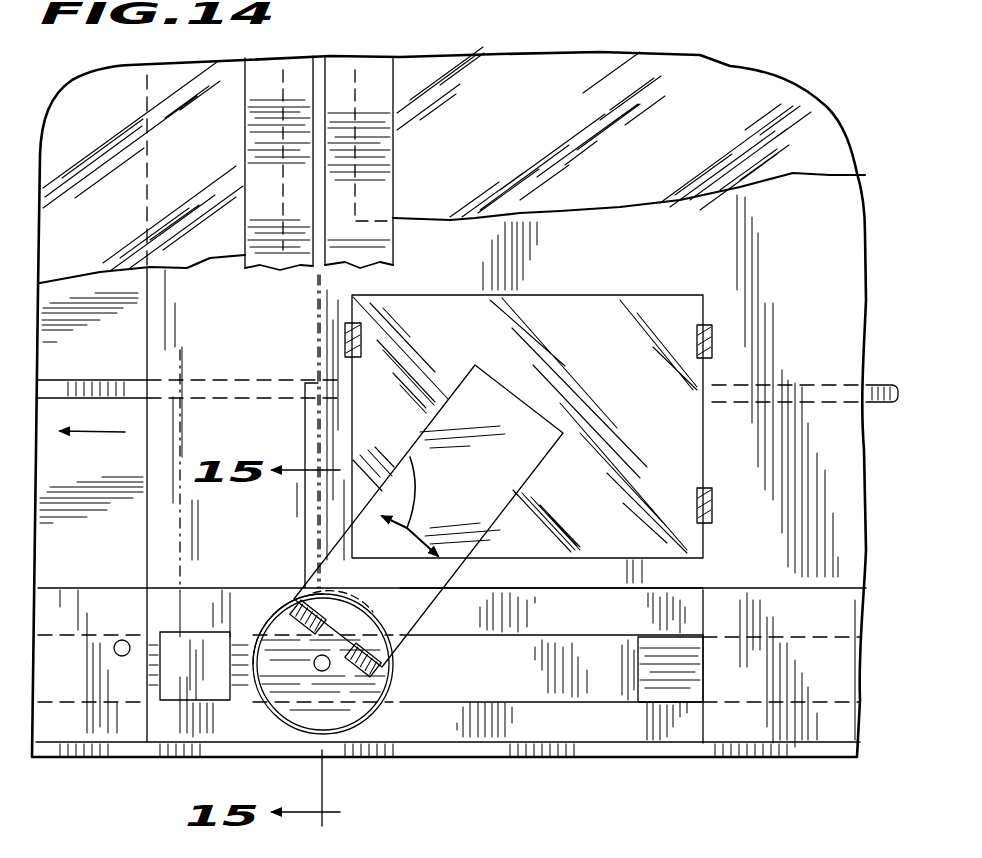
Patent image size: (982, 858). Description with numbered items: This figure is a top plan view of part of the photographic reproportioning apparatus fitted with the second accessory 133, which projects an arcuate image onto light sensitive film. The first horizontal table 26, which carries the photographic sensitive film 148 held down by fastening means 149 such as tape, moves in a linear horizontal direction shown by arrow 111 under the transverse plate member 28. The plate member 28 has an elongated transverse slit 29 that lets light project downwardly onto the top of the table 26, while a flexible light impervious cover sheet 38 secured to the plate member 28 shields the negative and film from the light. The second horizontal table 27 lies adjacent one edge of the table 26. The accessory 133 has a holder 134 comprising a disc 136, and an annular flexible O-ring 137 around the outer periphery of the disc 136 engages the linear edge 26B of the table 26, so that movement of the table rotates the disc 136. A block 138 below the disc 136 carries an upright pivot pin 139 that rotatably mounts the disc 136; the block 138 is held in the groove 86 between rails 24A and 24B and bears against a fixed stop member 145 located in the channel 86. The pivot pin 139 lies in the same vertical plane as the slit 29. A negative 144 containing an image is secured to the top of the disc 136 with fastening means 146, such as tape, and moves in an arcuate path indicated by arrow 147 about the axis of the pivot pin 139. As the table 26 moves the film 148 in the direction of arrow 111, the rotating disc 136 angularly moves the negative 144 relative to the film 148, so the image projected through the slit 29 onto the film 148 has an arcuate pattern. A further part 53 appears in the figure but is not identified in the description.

The first horizontal table 26 is at (833, 197).
The second horizontal table 27 is at (837, 670).
The transverse plate member 28 is at (380, 192).
The elongated transverse slit 29 is at (320, 62).
The flexible light impervious cover sheet 38 is at (596, 72).
The shelf 53 is at (117, 380).
The groove 86 is at (607, 678).
The arrow 111 is at (108, 436).
The second accessory 133 is at (422, 770).
The holder 134 is at (258, 708).
The disc 136 is at (372, 710).
The annular flexible O-ring 137 is at (397, 683).
The block 138 is at (247, 640).
The upright pivot pin 139 is at (318, 672).
The negative 144 is at (518, 487).
The fixed stop member 145 is at (190, 648).
The fastening means 146 is at (366, 648).
The arrow 147 is at (410, 458).
The photographic sensitive film 148 is at (633, 292).
The fastening means 149 is at (710, 340).
The rail 24A is at (550, 730).
The rail 24B is at (680, 610).
The linear edge of table 26B is at (560, 592).